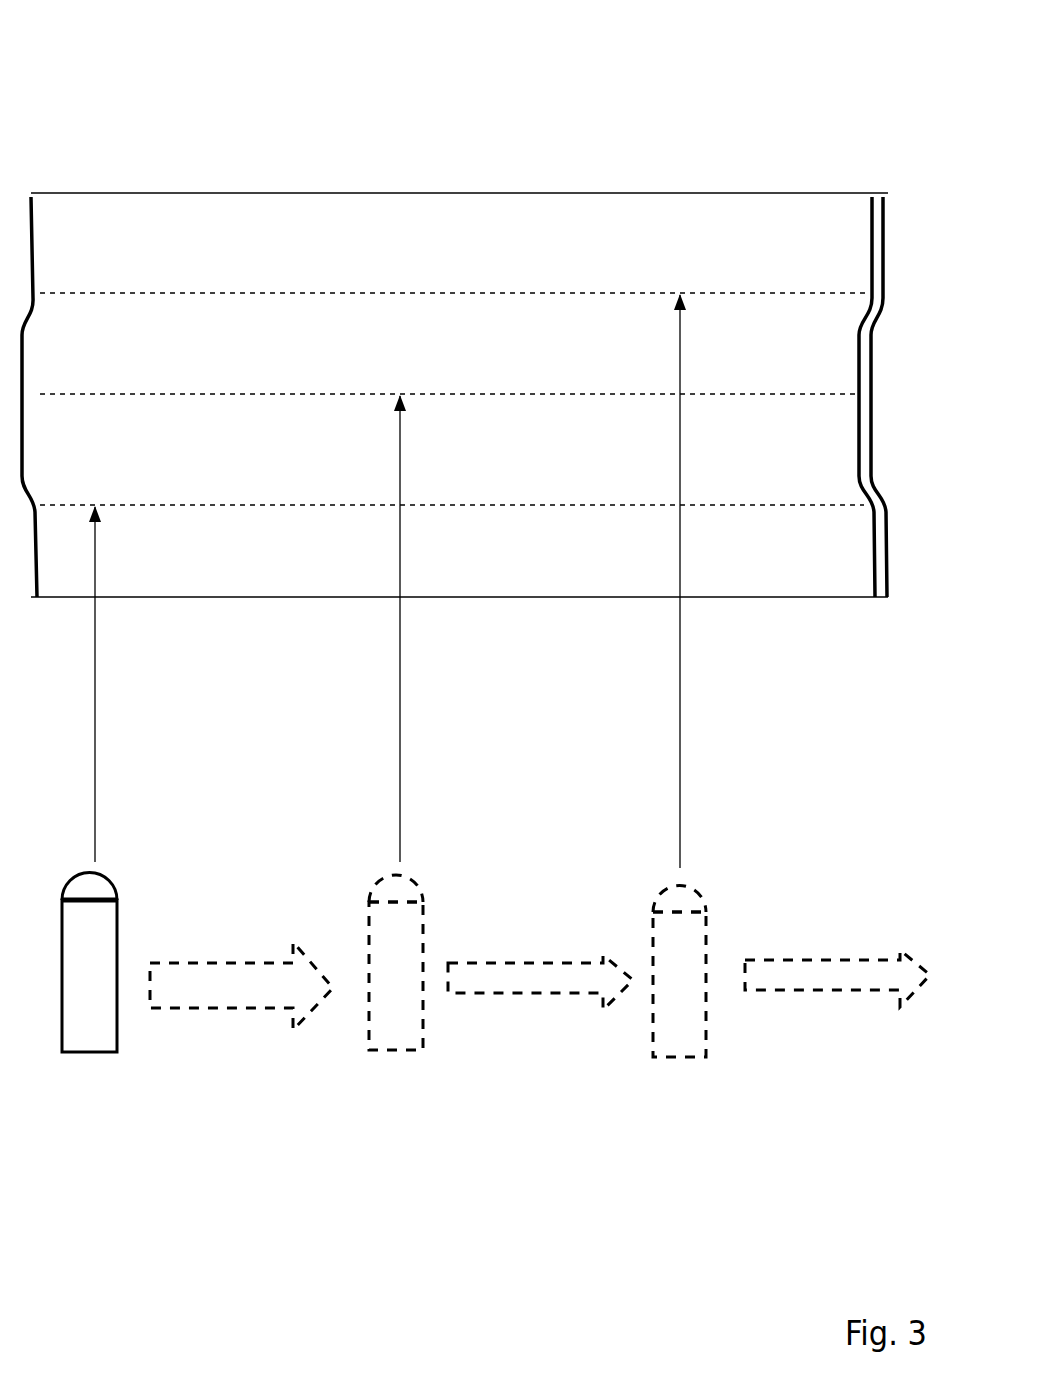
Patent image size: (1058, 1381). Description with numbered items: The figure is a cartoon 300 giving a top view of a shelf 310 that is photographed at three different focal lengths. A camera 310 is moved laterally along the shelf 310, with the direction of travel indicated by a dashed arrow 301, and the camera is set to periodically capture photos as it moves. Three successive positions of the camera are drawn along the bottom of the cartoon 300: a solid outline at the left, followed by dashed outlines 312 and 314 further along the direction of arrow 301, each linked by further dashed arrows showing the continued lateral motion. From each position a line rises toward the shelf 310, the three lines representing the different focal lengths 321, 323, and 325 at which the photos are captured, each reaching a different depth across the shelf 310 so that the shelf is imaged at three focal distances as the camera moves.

The cartoon 300 is at (121, 93).
The arrow 301 is at (241, 986).
The shelf 310 is at (768, 192).
The vehicle at second position 312 is at (391, 1066).
The vehicle at third position 314 is at (677, 1071).
The first focal length 321 is at (130, 684).
The second focal length 323 is at (431, 629).
The third focal length 325 is at (715, 581).